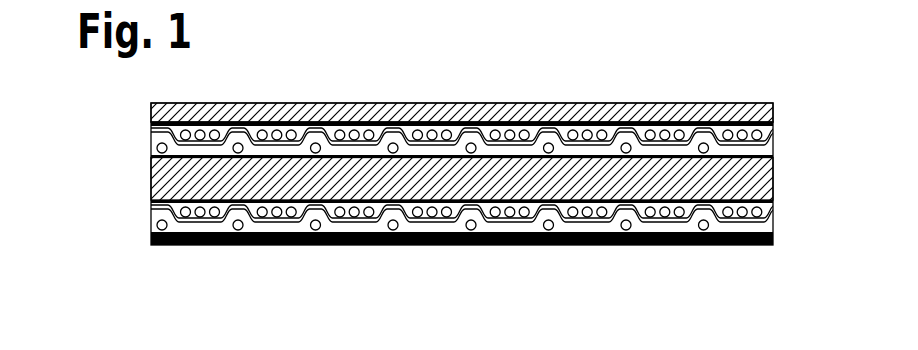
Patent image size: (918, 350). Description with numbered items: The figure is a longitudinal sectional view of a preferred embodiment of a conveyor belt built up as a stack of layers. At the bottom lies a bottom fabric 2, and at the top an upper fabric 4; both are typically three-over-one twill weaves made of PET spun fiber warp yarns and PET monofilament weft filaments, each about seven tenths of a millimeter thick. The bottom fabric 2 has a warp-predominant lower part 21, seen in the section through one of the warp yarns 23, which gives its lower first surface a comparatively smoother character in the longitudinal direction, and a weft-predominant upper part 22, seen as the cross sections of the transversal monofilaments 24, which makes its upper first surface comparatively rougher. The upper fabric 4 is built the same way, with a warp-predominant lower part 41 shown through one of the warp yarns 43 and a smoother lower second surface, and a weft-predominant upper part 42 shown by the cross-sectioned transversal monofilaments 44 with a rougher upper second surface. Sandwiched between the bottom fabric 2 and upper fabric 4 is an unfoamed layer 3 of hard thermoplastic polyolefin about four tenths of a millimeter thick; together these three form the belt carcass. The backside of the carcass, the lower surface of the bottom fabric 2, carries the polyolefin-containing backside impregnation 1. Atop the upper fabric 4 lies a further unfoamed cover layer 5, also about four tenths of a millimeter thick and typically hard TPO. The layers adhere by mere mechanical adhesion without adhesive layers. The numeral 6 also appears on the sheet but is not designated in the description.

The backside impregnation 1 is at (152, 237).
The bottom fabric 2 is at (404, 275).
The TPO layer 3 is at (152, 178).
The upper fabric 4 is at (404, 86).
The cover layer 5 is at (150, 112).
The bottom surface 6 is at (617, 343).
The lower part of the bottom fabric 21 is at (346, 242).
The upper part of the bottom fabric 22 is at (389, 236).
The warp yarns 23 is at (516, 224).
The transversal monofilaments 24 is at (602, 219).
The lower part of the top fabric 41 is at (318, 130).
The upper part of the top fabric 42 is at (304, 114).
The warp yarns 43 is at (467, 132).
The transversal monofilaments 44 is at (492, 130).